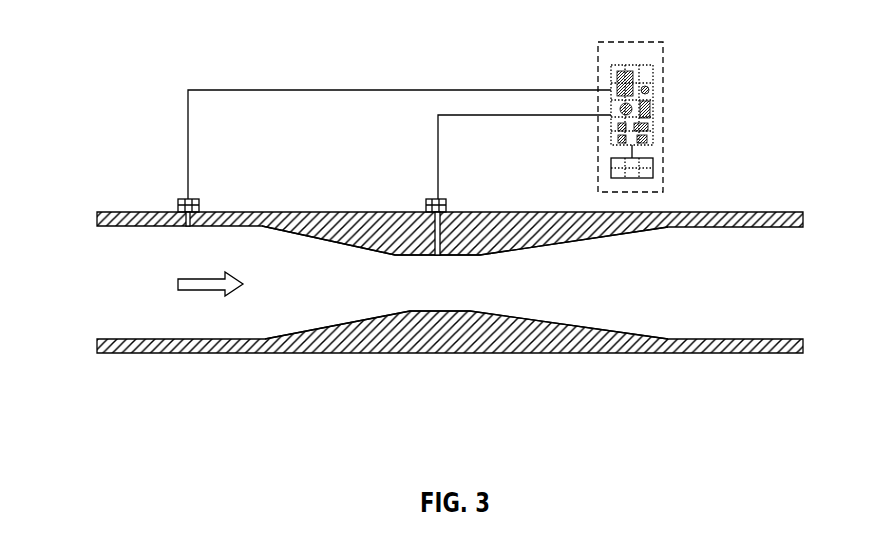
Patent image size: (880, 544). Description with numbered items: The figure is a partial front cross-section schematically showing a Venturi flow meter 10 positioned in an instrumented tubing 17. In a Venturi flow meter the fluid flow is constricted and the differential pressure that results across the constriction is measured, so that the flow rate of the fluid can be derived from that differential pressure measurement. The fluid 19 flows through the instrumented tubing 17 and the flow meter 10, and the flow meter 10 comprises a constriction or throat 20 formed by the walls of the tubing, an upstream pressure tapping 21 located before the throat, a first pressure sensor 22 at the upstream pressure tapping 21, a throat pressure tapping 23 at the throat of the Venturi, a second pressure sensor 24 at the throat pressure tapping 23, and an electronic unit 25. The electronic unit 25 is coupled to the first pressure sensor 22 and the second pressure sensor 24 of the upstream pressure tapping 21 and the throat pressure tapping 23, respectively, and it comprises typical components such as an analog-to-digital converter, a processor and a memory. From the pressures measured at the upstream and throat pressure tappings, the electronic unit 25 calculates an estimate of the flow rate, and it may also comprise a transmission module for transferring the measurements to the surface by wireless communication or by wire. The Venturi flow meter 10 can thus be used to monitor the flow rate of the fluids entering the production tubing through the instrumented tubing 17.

The Venturi flow meter 10 is at (450, 299).
The instrumented tubing 17 is at (779, 345).
The fluid 19 is at (183, 285).
The constriction or throat 20 is at (433, 293).
The upstream pressure tapping 21 is at (218, 213).
The first pressure sensor 22 is at (178, 200).
The throat pressure tapping 23 is at (472, 214).
The second pressure sensor 24 is at (426, 200).
The electronic unit 25 is at (663, 102).